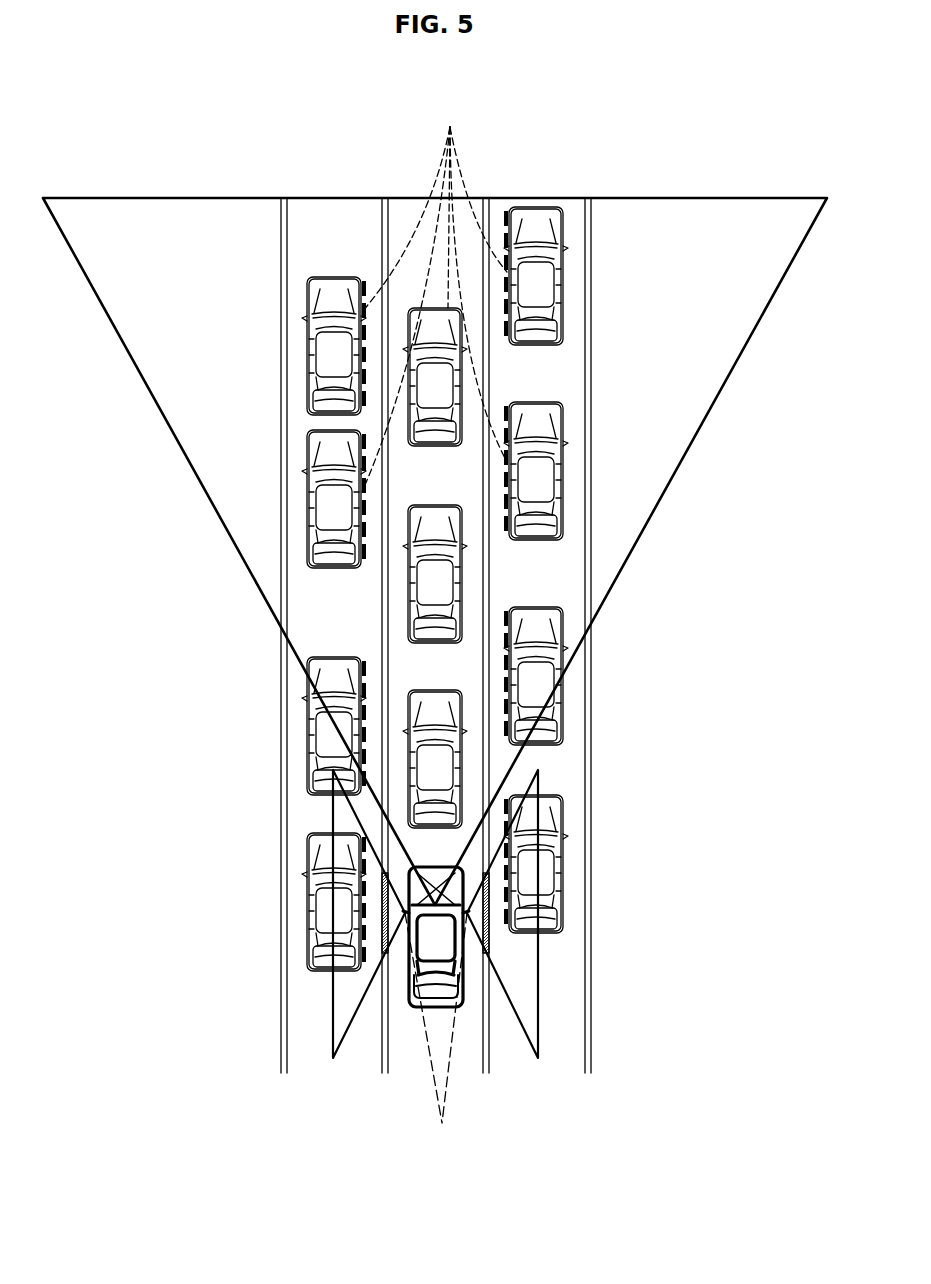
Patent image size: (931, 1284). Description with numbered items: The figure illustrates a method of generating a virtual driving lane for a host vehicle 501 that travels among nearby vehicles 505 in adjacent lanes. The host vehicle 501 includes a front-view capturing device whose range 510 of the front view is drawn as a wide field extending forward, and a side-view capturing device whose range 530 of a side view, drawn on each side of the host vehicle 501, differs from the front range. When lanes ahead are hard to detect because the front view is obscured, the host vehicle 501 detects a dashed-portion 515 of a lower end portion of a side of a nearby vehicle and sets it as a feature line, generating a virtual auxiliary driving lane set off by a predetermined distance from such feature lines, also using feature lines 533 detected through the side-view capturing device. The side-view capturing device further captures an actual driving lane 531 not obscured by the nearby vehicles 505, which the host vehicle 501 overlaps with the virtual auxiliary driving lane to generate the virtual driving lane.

The host vehicle 501 is at (425, 908).
The nearby vehicles 505 is at (543, 682).
The range of the front view 510 is at (700, 198).
The dashed-portion 515 is at (434, 293).
The range of a side view 530 is at (333, 1008).
The actual driving lane 531 is at (385, 913).
The feature lines 533 is at (436, 1035).